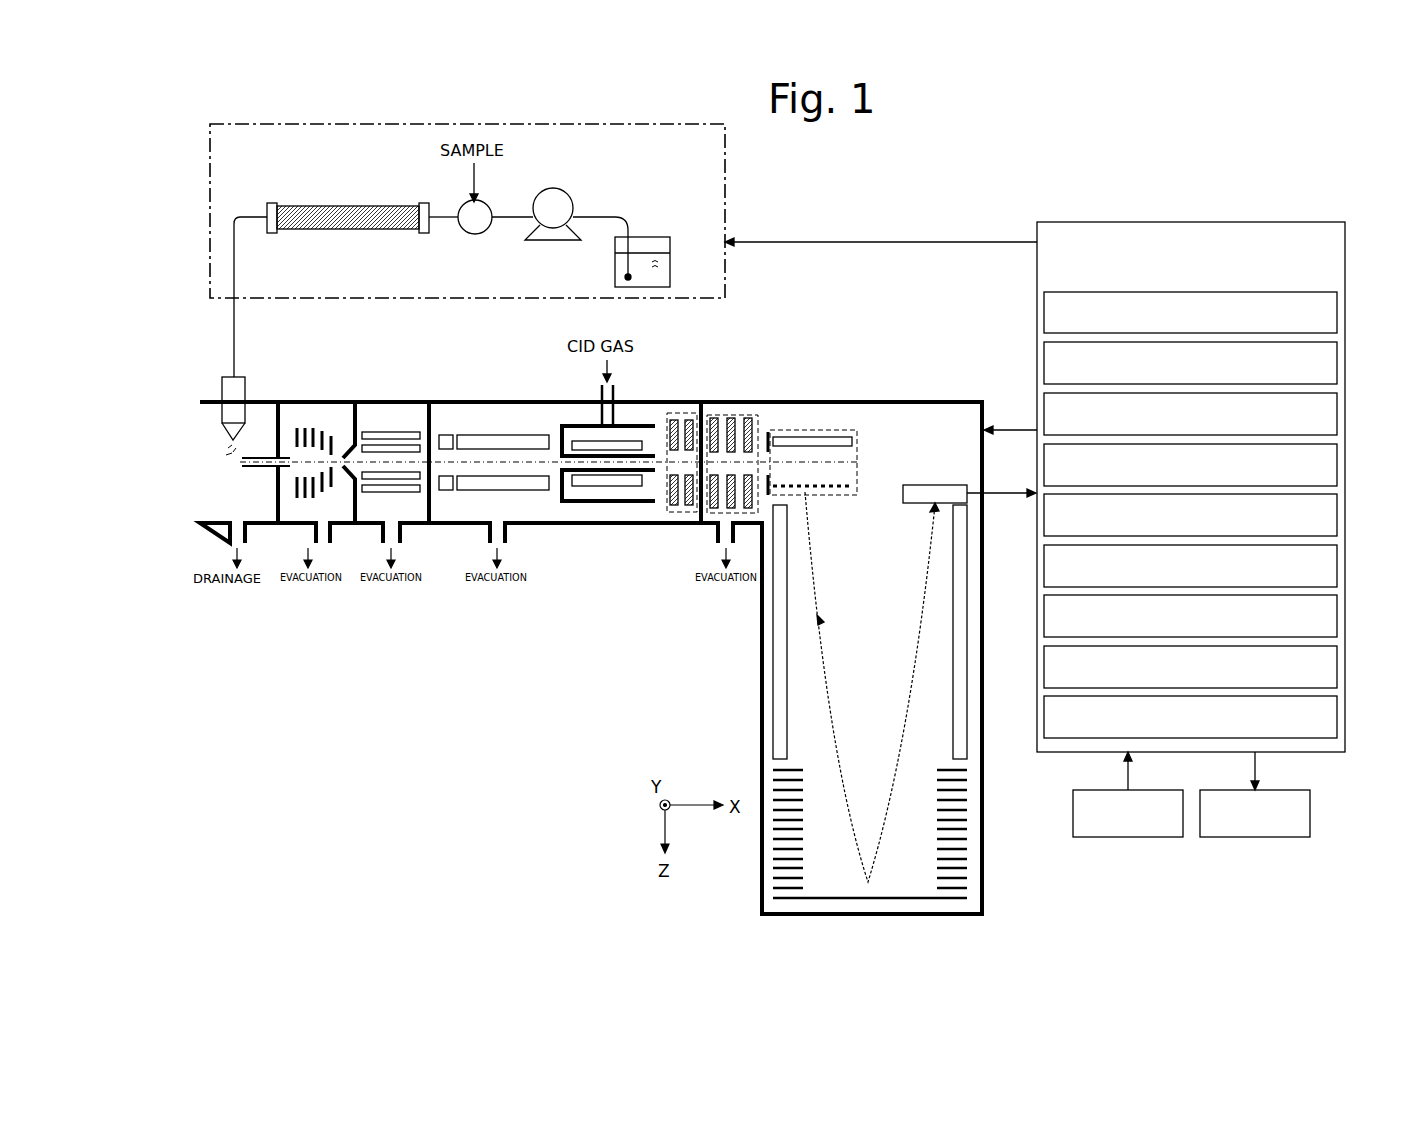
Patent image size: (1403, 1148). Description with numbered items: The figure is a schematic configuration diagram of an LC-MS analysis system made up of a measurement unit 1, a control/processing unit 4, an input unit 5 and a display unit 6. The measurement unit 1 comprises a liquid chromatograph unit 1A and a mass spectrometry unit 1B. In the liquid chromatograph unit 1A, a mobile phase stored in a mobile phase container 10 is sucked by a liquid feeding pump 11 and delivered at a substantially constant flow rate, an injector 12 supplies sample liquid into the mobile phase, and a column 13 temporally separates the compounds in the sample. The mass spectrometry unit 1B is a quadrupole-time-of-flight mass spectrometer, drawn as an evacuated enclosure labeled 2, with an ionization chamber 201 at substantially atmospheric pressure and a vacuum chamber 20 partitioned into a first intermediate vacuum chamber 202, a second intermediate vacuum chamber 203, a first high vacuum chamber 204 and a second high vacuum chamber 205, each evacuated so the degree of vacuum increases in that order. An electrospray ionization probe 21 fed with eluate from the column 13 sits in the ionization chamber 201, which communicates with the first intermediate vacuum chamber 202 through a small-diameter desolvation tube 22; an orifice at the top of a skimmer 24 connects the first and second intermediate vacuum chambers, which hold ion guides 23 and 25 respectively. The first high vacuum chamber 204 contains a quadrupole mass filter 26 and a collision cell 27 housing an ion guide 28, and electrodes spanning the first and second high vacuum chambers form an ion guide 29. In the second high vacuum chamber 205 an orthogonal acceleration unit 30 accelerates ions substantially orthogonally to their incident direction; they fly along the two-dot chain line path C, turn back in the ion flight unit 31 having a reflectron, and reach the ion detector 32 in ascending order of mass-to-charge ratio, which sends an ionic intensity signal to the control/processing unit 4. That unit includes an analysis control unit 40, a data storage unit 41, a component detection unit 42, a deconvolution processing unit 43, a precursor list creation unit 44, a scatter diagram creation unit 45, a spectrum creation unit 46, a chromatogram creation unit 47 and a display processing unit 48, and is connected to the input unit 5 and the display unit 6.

The measurement unit 1 is at (783, 278).
The liquid chromatograph unit 1A is at (723, 262).
The mass spectrometry unit 1B is at (796, 349).
The mass spectrometer chamber 2 is at (591, 658).
The mobile phase container 10 is at (651, 240).
The liquid feeding pump 11 is at (568, 193).
The injector 12 is at (480, 205).
The column 13 is at (355, 205).
The vacuum chamber 20 is at (440, 401).
The electrospray ionization probe 21 is at (228, 377).
The desolvation tube 22 is at (253, 457).
The ion guide 23 is at (312, 425).
The skimmer 24 is at (349, 450).
The ion guide 25 is at (388, 431).
The quadrupole mass filter 26 is at (490, 433).
The collision cell 27 is at (575, 424).
The ion guide 28 is at (623, 440).
The ion guide 29 is at (745, 413).
The orthogonal acceleration unit 30 is at (858, 461).
The ion flight unit 31 is at (885, 586).
The ion detector 32 is at (942, 485).
The ion flight path C is at (810, 462).
The ionization chamber 201 is at (222, 514).
The first intermediate vacuum chamber 202 is at (296, 514).
The second intermediate vacuum chamber 203 is at (374, 514).
The first high vacuum chamber 204 is at (612, 514).
The second high vacuum chamber 205 is at (708, 514).
The control/processing unit 4 is at (1346, 249).
The analysis control unit 40 is at (1338, 311).
The data storage unit 41 is at (1338, 363).
The component detection unit 42 is at (1338, 413).
The deconvolution processing unit 43 is at (1338, 463).
The precursor list creation unit 44 is at (1338, 514).
The scatter diagram creation unit 45 is at (1338, 564).
The spectrum creation unit 46 is at (1338, 615).
The chromatogram creation unit 47 is at (1338, 666).
The display processing unit 48 is at (1338, 716).
The input unit 5 is at (1106, 838).
The display unit 6 is at (1232, 838).